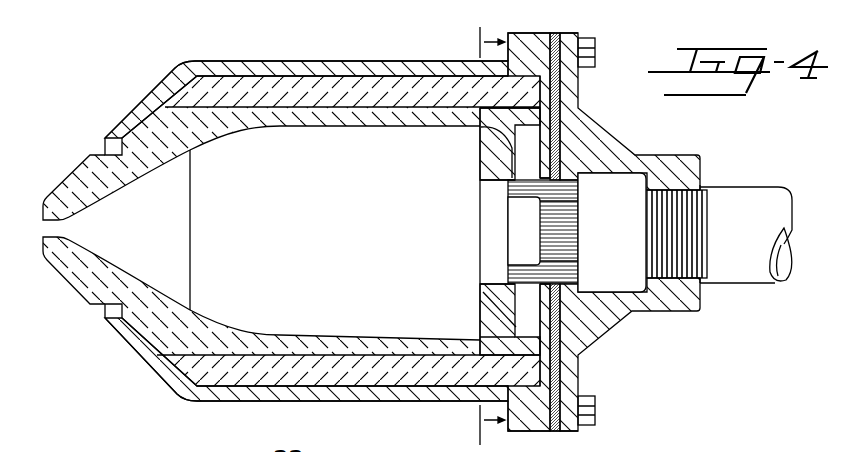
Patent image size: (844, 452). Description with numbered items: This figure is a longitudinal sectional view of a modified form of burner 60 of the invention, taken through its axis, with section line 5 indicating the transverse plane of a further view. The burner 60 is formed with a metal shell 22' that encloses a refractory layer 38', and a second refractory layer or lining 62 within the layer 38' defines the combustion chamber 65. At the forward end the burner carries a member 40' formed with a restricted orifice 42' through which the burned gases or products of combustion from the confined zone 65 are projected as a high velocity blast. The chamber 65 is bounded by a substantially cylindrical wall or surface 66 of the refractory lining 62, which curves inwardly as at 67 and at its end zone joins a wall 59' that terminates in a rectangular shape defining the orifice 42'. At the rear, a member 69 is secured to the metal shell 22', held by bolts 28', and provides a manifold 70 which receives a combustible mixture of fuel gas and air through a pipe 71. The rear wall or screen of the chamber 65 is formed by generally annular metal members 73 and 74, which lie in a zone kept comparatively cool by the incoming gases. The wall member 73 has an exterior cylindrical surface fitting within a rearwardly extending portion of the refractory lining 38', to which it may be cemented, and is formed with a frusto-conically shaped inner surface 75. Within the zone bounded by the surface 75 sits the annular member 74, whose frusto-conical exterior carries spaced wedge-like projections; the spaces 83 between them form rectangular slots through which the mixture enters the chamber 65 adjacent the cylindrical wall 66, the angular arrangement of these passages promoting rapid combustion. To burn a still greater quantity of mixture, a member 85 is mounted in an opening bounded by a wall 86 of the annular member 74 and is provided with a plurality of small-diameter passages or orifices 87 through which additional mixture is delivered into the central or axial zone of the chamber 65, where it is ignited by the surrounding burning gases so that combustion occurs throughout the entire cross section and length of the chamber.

The section line 5- 5 is at (476, 236).
The metal shell 22' is at (306, 370).
The bolts 28' is at (579, 230).
The refractory layer 38' is at (422, 331).
The member 40' is at (60, 270).
The restricted orifice 42' is at (58, 189).
The wall 59' is at (129, 275).
The burner 60 is at (284, 52).
The refractory layer or lining 62 is at (335, 123).
The combustion chamber 65 is at (350, 231).
The cylindrical wall or surface 66 is at (428, 128).
The inwardly curving portion 67 is at (214, 143).
The member 69 is at (607, 325).
The manifold 70 is at (630, 229).
The pipe 71 is at (745, 278).
The annular wall member 73 is at (522, 135).
The annular member 74 is at (483, 293).
The frusto-conically shaped inner surface 75 is at (484, 135).
The spaces 83 is at (481, 325).
The member 85 is at (578, 227).
The wall 86 is at (497, 175).
The passages or orifices 87 is at (578, 192).